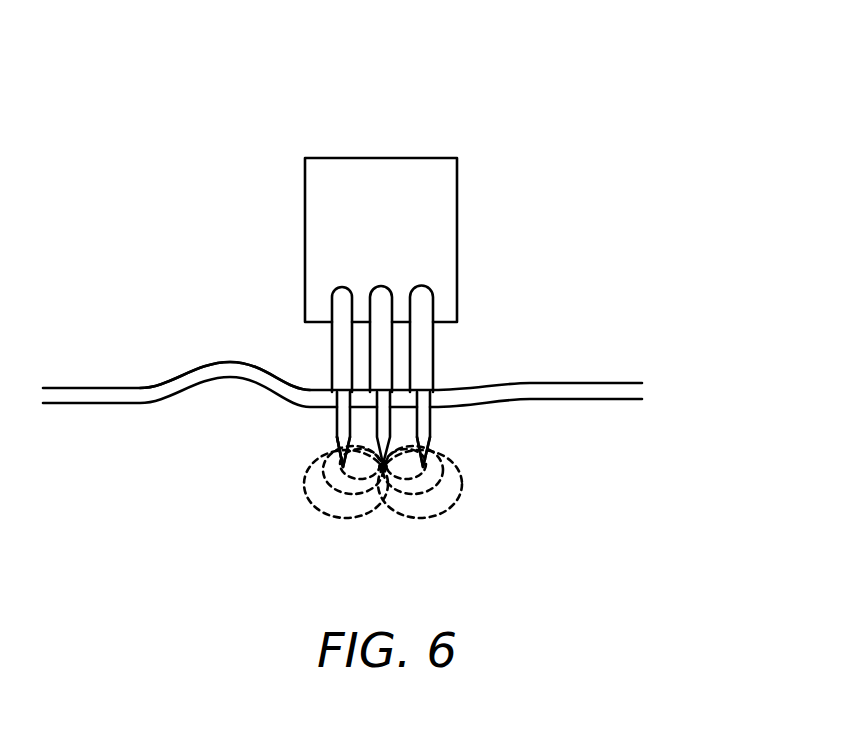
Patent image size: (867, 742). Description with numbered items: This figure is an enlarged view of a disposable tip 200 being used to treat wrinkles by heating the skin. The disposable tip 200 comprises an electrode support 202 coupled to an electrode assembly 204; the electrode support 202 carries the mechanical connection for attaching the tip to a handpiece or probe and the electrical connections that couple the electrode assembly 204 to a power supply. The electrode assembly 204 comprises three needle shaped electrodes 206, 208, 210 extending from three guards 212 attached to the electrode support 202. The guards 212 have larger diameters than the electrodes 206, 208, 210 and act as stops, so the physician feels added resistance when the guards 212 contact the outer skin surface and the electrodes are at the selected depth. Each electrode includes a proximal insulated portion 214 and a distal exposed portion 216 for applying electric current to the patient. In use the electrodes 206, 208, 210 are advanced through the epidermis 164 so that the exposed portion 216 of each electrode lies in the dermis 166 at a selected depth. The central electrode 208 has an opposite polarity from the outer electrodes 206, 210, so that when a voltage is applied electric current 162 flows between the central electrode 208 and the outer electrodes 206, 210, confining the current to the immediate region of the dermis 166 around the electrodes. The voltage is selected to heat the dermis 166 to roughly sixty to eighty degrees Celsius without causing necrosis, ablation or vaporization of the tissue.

The disposable tip 200 is at (502, 122).
The electrode support 202 is at (457, 213).
The electrode assembly 204 is at (470, 357).
The outer electrode 206 is at (327, 428).
The central electrode 208 is at (368, 432).
The outer electrode 210 is at (440, 423).
The guard 212 is at (330, 288).
The proximal insulated portion 214 is at (333, 398).
The distal exposed portion 216 is at (336, 448).
The electric current 162 is at (448, 513).
The epidermis 164 is at (582, 382).
The dermis 166 is at (578, 423).